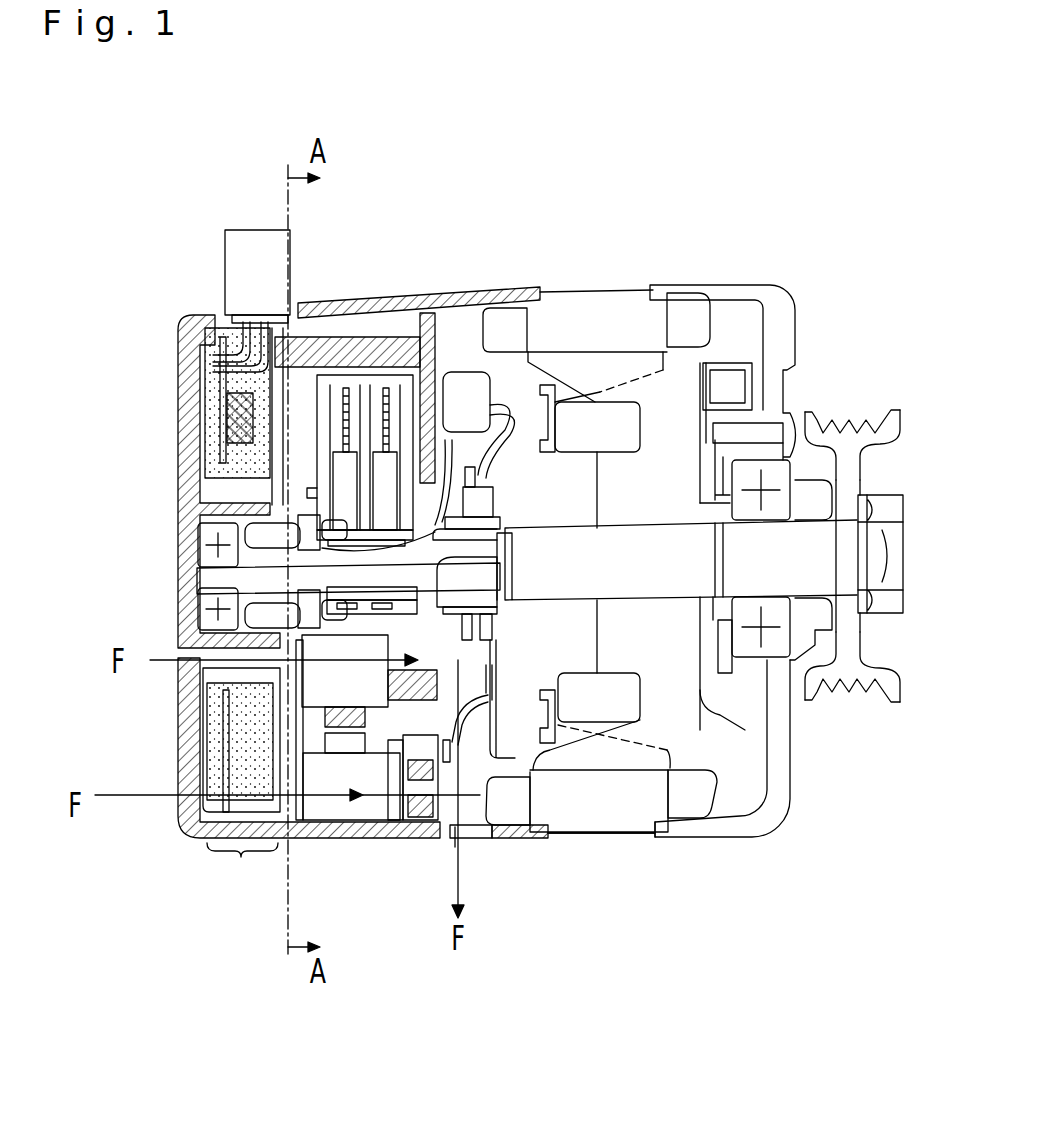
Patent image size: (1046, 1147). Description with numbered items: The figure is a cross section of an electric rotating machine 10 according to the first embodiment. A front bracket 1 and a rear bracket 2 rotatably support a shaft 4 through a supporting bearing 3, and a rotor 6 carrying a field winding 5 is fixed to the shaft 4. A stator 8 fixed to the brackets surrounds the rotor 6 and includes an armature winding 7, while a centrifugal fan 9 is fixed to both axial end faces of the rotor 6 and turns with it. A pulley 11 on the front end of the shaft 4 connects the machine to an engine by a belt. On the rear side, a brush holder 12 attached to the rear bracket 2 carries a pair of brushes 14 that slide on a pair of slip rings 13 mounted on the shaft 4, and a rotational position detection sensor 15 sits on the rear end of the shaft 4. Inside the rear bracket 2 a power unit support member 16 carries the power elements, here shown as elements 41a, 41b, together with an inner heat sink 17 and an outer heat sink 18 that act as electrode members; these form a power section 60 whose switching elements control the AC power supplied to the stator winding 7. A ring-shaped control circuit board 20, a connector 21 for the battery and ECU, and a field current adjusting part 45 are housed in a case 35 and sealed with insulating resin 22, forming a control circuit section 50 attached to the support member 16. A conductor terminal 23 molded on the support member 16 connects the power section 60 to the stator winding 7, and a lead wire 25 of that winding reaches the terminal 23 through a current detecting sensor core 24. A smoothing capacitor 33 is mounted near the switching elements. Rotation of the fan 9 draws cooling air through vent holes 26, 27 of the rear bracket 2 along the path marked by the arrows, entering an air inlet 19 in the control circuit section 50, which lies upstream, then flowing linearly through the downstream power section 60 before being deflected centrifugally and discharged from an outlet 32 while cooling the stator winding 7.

The front bracket 1 is at (725, 288).
The rear bracket 2 is at (520, 295).
The supporting bearing 3 is at (205, 548).
The shaft 4 is at (652, 553).
The field winding 5 is at (612, 706).
The rotor 6 is at (668, 688).
The armature winding 7 is at (530, 810).
The stator 8 is at (615, 818).
The centrifugal fan 9 is at (470, 395).
The electric rotating machine 10 is at (692, 212).
The pulley 11 is at (825, 420).
The brush holder 12 is at (368, 380).
The slip rings 13 is at (437, 390).
The brushes 14 is at (385, 495).
The rotational position detection sensor 15 is at (200, 597).
The power unit support member 16 is at (325, 338).
The inner heat sink 17 is at (300, 700).
The outer heat sink 18 is at (372, 790).
The air inlet 19 is at (228, 795).
The control circuit board 20 is at (232, 460).
The connector 21 is at (240, 268).
The insulating resin 22 is at (210, 490).
The conductor terminal 23 is at (427, 822).
The current detecting sensor core 24 is at (397, 825).
The lead wire 25 is at (475, 838).
The vent hole 26 is at (180, 682).
The vent hole 27 is at (195, 808).
The outlet 32 is at (490, 840).
The smoothing capacitor 33 is at (432, 713).
The case 35 is at (200, 385).
The magnetic pole member 41a is at (330, 680).
The magnetic pole member 41b is at (350, 740).
The field current adjusting part 45 is at (240, 415).
The control circuit section 50 is at (222, 883).
The power section 60 is at (320, 745).